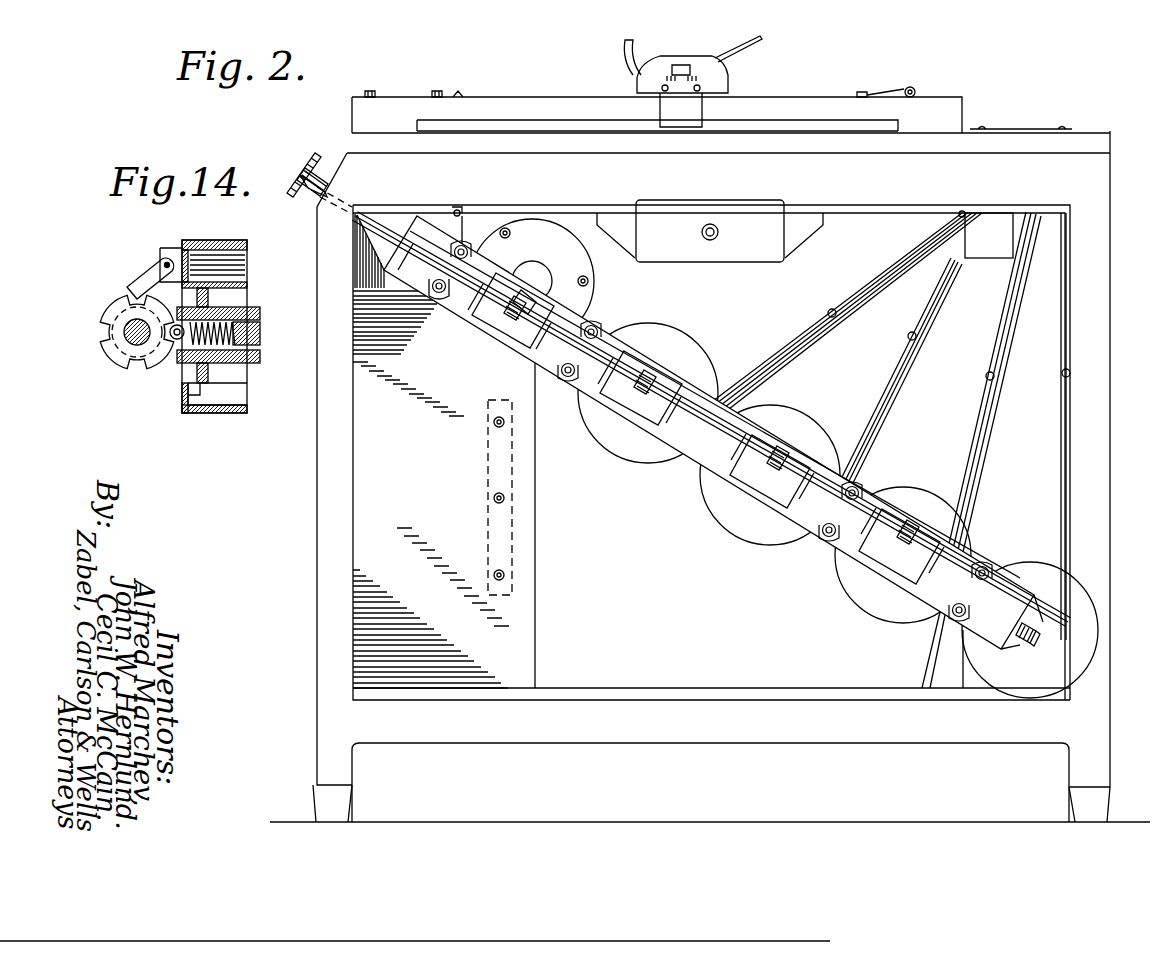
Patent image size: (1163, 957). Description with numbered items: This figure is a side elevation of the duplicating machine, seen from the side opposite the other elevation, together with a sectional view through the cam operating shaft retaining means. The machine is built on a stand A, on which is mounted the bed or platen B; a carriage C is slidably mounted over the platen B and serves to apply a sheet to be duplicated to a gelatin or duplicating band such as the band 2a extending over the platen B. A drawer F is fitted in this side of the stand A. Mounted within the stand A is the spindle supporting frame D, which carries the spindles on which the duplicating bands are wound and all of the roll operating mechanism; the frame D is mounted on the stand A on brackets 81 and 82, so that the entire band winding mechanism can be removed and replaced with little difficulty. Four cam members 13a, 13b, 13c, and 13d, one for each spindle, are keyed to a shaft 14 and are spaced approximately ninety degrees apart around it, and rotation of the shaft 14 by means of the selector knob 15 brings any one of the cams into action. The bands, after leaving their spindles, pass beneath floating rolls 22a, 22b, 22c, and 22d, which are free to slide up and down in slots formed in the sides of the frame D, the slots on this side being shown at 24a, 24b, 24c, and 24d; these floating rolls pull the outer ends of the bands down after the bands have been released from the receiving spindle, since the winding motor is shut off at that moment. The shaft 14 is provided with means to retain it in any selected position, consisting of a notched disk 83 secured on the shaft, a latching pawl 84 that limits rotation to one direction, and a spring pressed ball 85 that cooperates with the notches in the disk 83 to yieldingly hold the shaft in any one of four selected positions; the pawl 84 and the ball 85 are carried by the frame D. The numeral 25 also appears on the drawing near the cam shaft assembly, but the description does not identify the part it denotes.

In FIG. 2, the gelatin or duplicating band 2a is at (762, 381).
In FIG. 2, the cam member 13a is at (665, 356).
In FIG. 2, the cam member 13b is at (783, 460).
In FIG. 2, the cam member 13c is at (913, 536).
In FIG. 2, the cam member 13d is at (1025, 640).
In FIG. 2, the cam operating shaft 14 is at (528, 290).
In FIG. 14, the cam operating shaft 14 is at (124, 352).
In FIG. 2, the selector knob 15 is at (310, 153).
In FIG. 2, the floating roll 22a is at (830, 313).
In FIG. 2, the floating roll 22b is at (912, 336).
In FIG. 2, the floating roll 22c is at (990, 377).
In FIG. 2, the floating roll 22d is at (1066, 378).
In FIG. 2, the slot 24a is at (861, 291).
In FIG. 2, the slot 24b is at (882, 400).
In FIG. 2, the slot 24c is at (980, 428).
In FIG. 2, the slot 24d is at (1061, 500).
In FIG. 2, the hub 25 is at (594, 306).
In FIG. 2, the bracket 81 is at (930, 636).
In FIG. 2, the bracket 82 is at (432, 302).
In FIG. 2, the notched disk 83 is at (497, 310).
In FIG. 14, the notched disk 83 is at (112, 305).
In FIG. 2, the latching pawl 84 is at (578, 270).
In FIG. 14, the latching pawl 84 is at (157, 265).
In FIG. 14, the spring pressed ball 85 is at (195, 366).
In FIG. 2, the stand A is at (1097, 287).
In FIG. 2, the bed or platen B is at (545, 97).
In FIG. 2, the carriage C is at (722, 73).
In FIG. 2, the spindle supporting frame D is at (853, 543).
In FIG. 14, the spindle supporting frame D is at (187, 395).
In FIG. 2, the drawer F is at (722, 217).